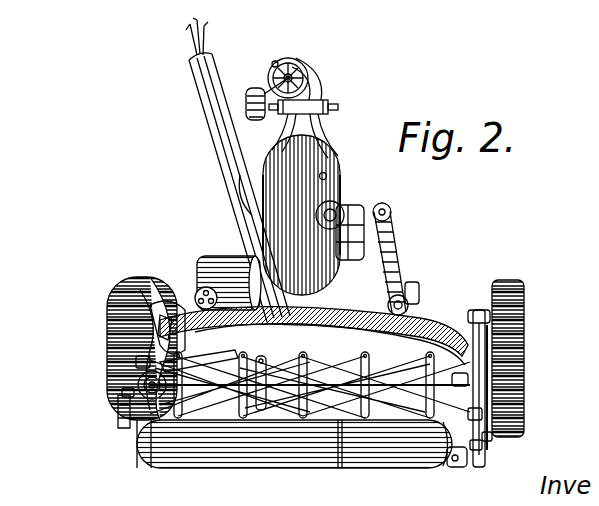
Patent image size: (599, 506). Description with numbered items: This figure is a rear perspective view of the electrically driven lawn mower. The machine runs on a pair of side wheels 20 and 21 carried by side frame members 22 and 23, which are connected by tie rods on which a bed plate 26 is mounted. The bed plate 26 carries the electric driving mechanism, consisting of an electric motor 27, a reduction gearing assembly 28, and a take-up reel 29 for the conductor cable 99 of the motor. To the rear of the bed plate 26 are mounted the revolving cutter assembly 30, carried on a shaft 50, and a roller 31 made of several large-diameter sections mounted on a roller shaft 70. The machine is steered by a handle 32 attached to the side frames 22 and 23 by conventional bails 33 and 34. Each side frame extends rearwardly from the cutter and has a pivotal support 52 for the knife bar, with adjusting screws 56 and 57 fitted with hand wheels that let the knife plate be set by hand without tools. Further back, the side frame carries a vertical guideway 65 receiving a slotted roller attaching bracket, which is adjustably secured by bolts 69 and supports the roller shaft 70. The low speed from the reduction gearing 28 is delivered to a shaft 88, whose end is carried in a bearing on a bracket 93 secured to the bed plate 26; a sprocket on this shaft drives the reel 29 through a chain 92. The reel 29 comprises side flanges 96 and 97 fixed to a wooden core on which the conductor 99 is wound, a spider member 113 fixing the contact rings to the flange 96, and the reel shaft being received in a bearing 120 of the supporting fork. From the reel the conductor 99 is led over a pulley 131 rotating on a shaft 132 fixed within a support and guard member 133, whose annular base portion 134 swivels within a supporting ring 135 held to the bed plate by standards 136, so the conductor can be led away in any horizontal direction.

The side wheel 20 is at (143, 280).
The side wheel 21 is at (506, 290).
The side frame member 22 is at (176, 306).
The side frame member 23 is at (480, 312).
The bed plate 26 is at (213, 349).
The electric motor 27 is at (225, 262).
The reduction gearing assembly 28 is at (398, 290).
The take-up reel 29 is at (325, 157).
The revolving cutter assembly 30 is at (220, 407).
The roller 31 is at (306, 456).
The handle 32 is at (205, 120).
The bail 33 is at (205, 286).
The bail 34 is at (418, 330).
The shaft 50 is at (262, 393).
The pivotal support 52 is at (482, 415).
The adjusting screw 56 is at (140, 385).
The adjusting screw 57 is at (488, 398).
The vertical guideway 65 is at (118, 410).
The bolt 69 is at (482, 445).
The roller shaft 70 is at (467, 458).
The shaft 88 is at (472, 309).
The chain 92 is at (393, 243).
The bracket 93 is at (414, 290).
The side flange 96 is at (345, 185).
The side flange 97 is at (262, 160).
The conductor cable 99 is at (266, 85).
The spider member 113 is at (327, 176).
The bearing 120 is at (397, 253).
The pulley 131 is at (273, 62).
The shaft 132 is at (293, 58).
The support and guard member 133 is at (310, 78).
The annular base portion 134 is at (321, 101).
The supporting ring 135 is at (334, 106).
The standard 136 is at (330, 168).